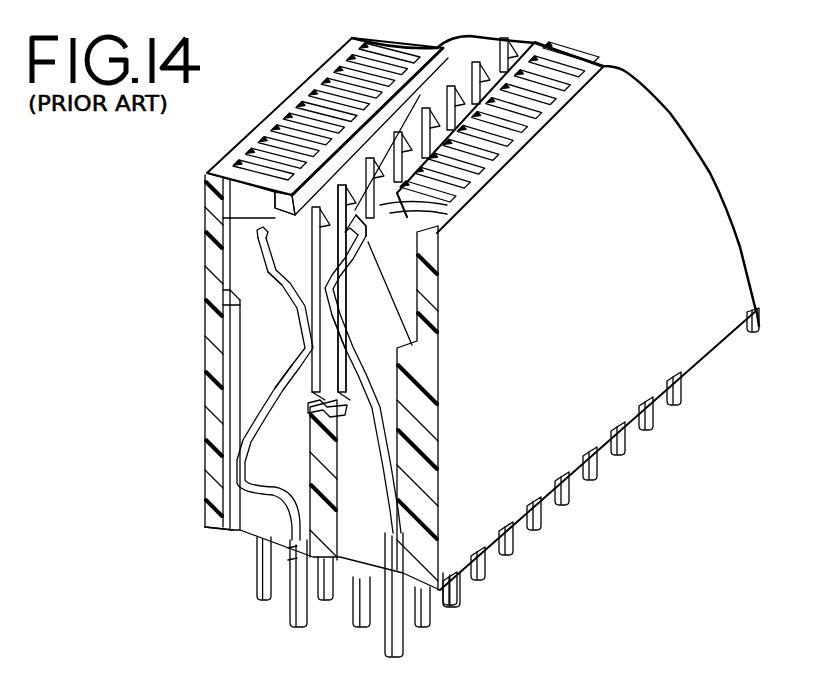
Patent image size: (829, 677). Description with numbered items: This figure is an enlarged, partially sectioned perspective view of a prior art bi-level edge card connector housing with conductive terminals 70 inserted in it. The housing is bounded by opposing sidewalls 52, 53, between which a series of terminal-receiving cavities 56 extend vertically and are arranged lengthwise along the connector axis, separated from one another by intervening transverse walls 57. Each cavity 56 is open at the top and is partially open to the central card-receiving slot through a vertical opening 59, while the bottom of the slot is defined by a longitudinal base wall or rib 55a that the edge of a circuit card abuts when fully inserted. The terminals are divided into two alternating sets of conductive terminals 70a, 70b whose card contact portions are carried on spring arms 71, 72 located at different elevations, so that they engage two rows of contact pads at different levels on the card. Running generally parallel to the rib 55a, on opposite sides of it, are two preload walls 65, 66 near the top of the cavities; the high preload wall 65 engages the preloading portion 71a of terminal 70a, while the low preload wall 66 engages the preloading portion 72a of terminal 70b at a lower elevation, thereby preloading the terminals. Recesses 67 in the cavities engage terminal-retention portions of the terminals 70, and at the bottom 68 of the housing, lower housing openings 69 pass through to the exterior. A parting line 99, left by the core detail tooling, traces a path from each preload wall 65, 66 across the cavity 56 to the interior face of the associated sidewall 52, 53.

The sidewall 52 is at (684, 197).
The sidewall 53 is at (205, 170).
The base wall 55a is at (393, 507).
The terminal-receiving cavity 56 is at (333, 89).
The transverse wall 57 is at (500, 133).
The vertical opening 59 is at (420, 95).
The high preload wall 65 is at (440, 203).
The low preload wall 66 is at (275, 218).
The recess 67 is at (385, 562).
The bottom of the connector housing 68 is at (205, 527).
The lower housing opening 69 is at (288, 543).
The conductive terminal 70 is at (380, 425).
The conductive terminal 70a is at (343, 308).
The conductive terminal 70b is at (303, 333).
The spring arm 71 is at (330, 280).
The preloading portion 71a is at (363, 244).
The spring arm 72 is at (300, 353).
The preloading portion 72a is at (266, 268).
The parting line 99 is at (228, 295).